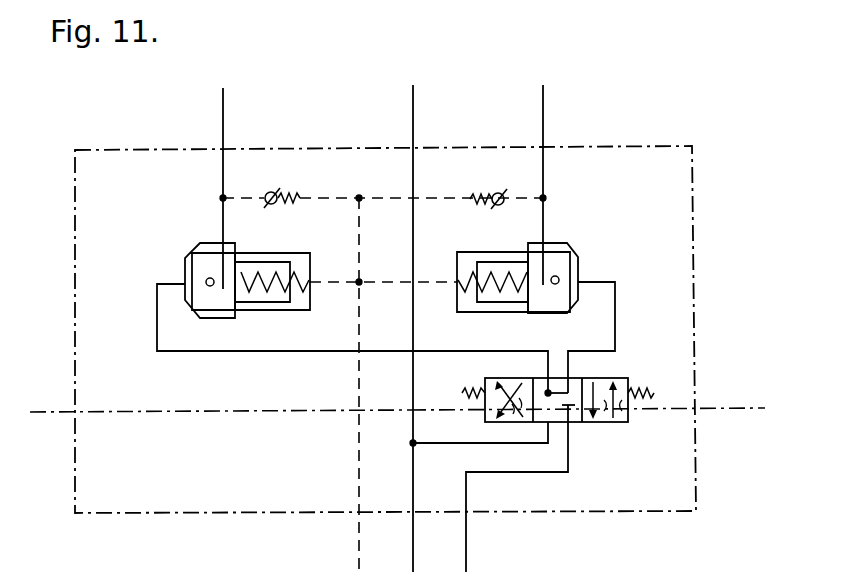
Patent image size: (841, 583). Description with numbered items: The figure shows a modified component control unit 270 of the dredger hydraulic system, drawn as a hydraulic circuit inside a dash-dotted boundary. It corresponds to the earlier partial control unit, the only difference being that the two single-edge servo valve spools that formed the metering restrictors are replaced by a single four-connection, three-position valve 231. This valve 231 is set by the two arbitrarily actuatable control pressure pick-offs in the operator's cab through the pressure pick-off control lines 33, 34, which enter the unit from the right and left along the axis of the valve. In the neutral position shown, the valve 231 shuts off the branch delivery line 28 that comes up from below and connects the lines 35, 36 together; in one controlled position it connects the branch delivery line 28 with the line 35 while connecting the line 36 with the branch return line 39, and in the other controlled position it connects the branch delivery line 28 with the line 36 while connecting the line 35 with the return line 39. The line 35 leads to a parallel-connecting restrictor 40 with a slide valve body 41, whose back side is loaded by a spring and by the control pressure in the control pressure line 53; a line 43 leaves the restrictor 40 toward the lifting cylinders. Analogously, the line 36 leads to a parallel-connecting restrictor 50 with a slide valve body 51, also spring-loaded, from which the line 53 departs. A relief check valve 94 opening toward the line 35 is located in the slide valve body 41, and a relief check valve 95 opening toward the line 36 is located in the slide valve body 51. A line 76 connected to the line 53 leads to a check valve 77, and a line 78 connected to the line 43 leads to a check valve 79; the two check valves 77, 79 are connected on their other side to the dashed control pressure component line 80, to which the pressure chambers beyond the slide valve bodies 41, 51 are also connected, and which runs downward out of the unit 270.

The component control unit 270 is at (692, 240).
The pressure pick-off control line 34 is at (52, 412).
The pressure pick-off control line 33 is at (718, 410).
The control pressure line 53 is at (226, 122).
The line 43 is at (546, 122).
The branch return line 39 is at (413, 535).
The branch delivery line 28 is at (466, 535).
The control pressure component line 80 is at (358, 532).
The line 76 is at (237, 197).
The check valve 77 is at (278, 194).
The line 78 is at (510, 195).
The check valve 79 is at (494, 193).
The parallel-connecting restrictor 50 is at (200, 252).
The slide valve body 51 is at (270, 253).
The relief check valve 95 is at (206, 280).
The parallel-connecting restrictor 40 is at (570, 250).
The slide valve body 41 is at (500, 252).
The relief check valve 94 is at (559, 278).
The line 36 is at (437, 351).
The line 35 is at (615, 320).
The 4-connection/3-position valve 231 is at (600, 422).